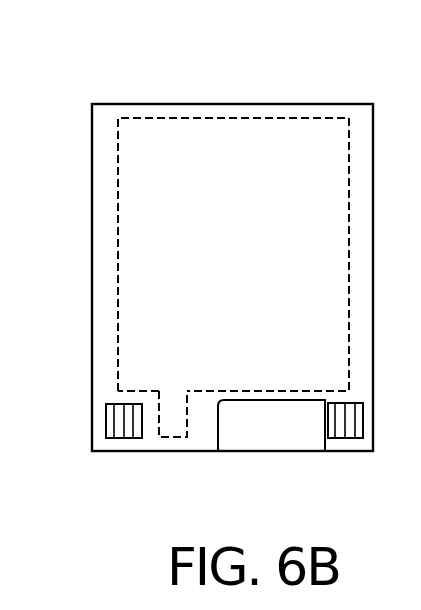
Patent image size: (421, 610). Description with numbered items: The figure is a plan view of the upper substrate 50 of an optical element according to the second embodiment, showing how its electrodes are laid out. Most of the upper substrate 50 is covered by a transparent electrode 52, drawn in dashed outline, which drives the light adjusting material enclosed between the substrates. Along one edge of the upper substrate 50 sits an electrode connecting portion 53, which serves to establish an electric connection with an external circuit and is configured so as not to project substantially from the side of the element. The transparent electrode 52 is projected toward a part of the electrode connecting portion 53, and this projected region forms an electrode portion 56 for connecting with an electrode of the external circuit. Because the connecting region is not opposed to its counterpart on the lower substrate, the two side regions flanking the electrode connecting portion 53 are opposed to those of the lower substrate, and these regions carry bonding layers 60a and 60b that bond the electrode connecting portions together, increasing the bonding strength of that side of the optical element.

The upper substrate 50 is at (92, 209).
The transparent electrode 52 is at (246, 116).
The electrode connecting portion 53 is at (330, 452).
The electrode portion 56 is at (172, 423).
The bonding layer 60a is at (350, 430).
The bonding layer 60b is at (117, 425).